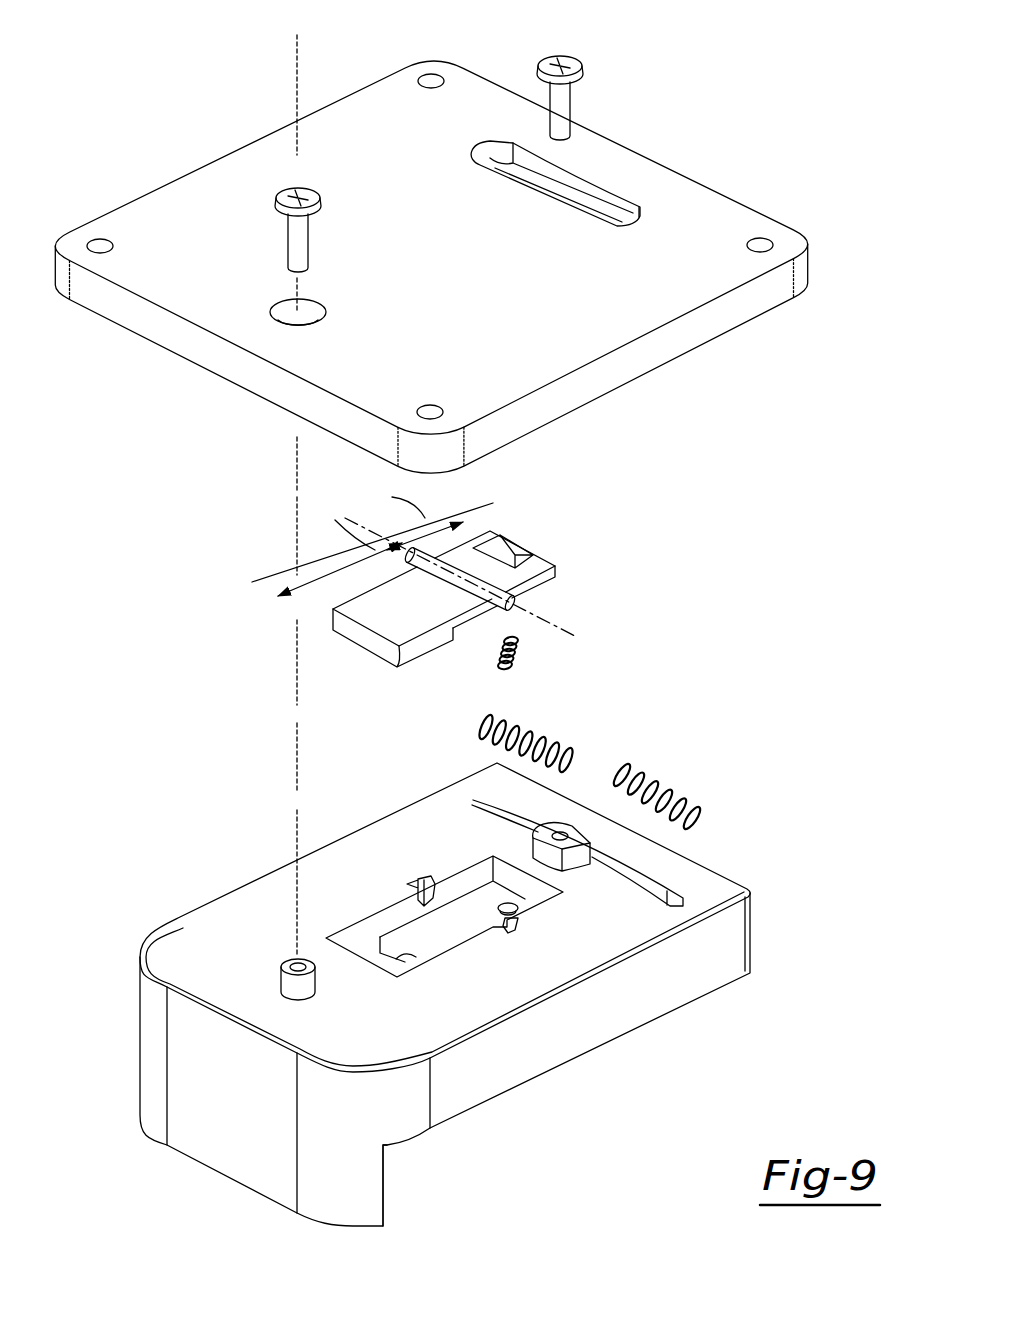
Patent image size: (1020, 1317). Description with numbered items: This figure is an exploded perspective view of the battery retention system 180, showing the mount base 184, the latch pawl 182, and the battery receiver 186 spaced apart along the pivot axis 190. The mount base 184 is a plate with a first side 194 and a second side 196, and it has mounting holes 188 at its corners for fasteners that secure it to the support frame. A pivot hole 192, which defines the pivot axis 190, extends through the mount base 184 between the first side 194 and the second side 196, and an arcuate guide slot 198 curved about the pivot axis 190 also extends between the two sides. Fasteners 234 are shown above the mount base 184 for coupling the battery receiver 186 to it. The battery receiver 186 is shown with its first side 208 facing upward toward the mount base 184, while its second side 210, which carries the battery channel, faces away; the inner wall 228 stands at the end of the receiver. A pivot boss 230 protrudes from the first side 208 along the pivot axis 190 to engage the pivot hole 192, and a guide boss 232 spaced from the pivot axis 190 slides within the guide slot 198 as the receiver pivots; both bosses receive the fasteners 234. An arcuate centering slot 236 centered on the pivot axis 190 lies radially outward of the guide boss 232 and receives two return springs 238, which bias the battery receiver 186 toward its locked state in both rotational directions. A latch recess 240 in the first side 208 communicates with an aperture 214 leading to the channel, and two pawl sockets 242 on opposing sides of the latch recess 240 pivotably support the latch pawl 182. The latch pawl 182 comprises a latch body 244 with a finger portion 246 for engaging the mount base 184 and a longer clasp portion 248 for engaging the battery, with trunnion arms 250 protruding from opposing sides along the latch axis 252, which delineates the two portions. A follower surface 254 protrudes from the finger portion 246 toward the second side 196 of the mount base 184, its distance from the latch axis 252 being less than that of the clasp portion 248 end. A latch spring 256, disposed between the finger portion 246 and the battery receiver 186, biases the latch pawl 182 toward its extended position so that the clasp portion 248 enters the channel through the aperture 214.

The battery retention system 180 is at (769, 72).
The latch pawl 182 is at (540, 522).
The mount base 184 is at (232, 92).
The battery receiver 186 is at (243, 843).
The mounting holes 188 is at (100, 240).
The pivot axis 190 is at (298, 522).
The pivot hole 192 is at (318, 310).
The first side 194 is at (386, 112).
The second side 196 is at (148, 345).
The guide slot 198 is at (604, 188).
The first side 208 is at (220, 932).
The second side 210 is at (690, 1002).
The aperture 214 is at (400, 953).
The inner wall 228 is at (387, 1182).
The pivot boss 230 is at (280, 976).
The guide boss 232 is at (575, 860).
The fasteners 234 is at (308, 188).
The centering slot 236 is at (673, 877).
The return springs 238 is at (667, 781).
The latch recess 240 is at (453, 876).
The pawl sockets 242 is at (413, 884).
The latch body 244 is at (506, 626).
The finger portion 246 is at (573, 545).
The clasp portion 248 is at (365, 658).
The trunnion arms 250 is at (403, 552).
The latch axis 252 is at (563, 633).
The follower surface 254 is at (505, 530).
The latch spring 256 is at (518, 656).